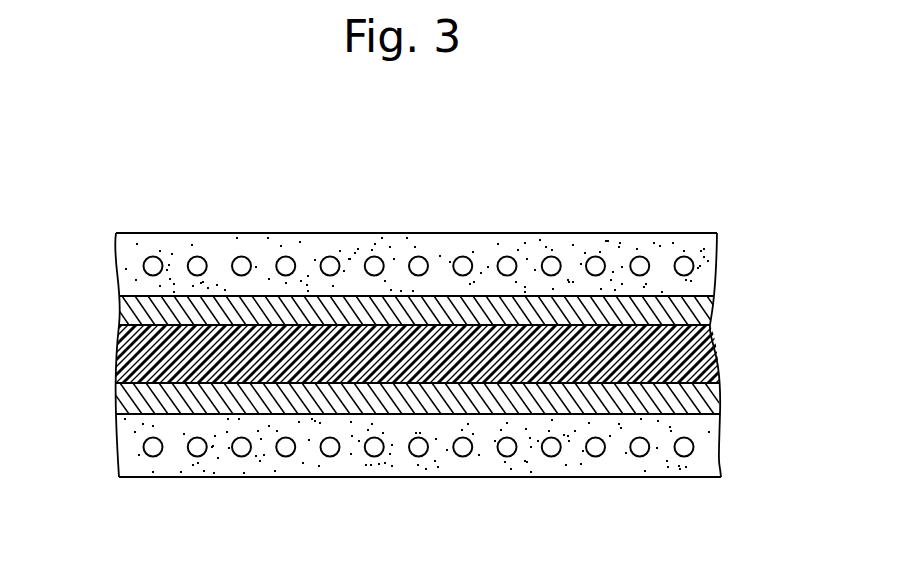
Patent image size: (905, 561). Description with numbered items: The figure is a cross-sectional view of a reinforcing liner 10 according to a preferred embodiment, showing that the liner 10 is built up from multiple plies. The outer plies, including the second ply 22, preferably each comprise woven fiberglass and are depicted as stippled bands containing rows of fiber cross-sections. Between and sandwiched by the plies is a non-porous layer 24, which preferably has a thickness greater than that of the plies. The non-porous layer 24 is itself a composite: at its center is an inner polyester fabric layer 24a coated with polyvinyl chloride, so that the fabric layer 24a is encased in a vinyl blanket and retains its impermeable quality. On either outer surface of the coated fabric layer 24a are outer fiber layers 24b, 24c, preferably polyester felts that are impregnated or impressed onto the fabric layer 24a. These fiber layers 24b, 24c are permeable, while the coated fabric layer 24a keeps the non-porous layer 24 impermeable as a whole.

The liner 10 is at (630, 173).
The second ply 22 is at (602, 467).
The non-porous layer 24 is at (97, 368).
The polyester fabric layer 24a is at (712, 367).
The outer fiber layer 24b is at (712, 308).
The outer fiber layer 24c is at (700, 410).